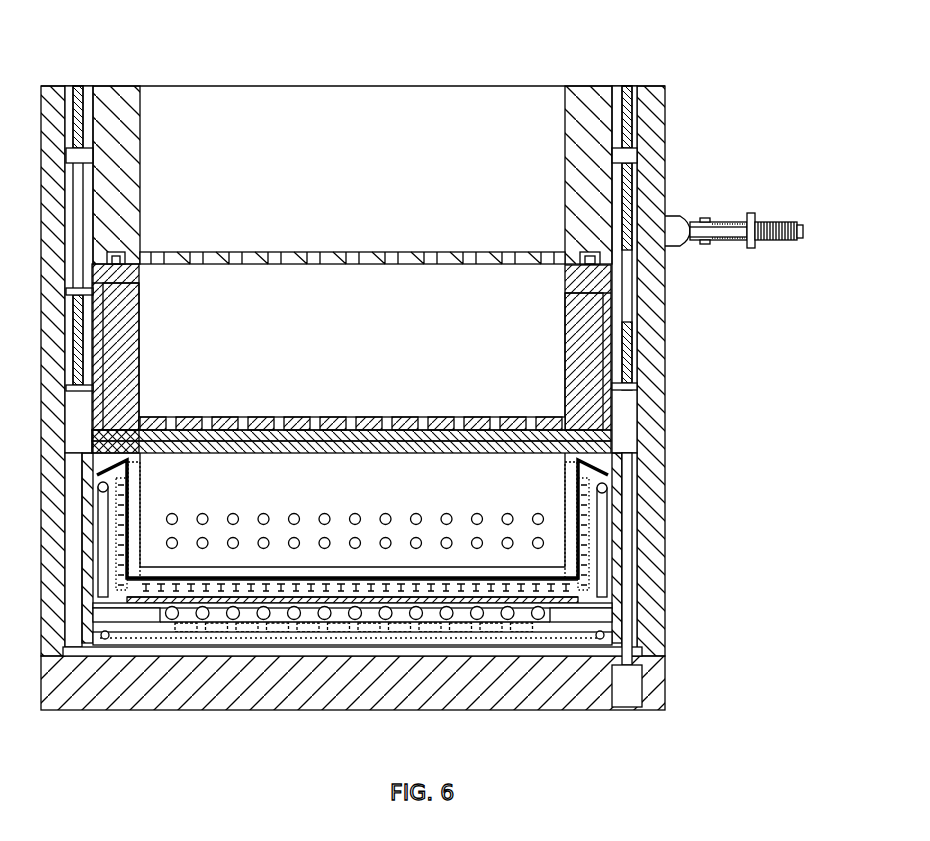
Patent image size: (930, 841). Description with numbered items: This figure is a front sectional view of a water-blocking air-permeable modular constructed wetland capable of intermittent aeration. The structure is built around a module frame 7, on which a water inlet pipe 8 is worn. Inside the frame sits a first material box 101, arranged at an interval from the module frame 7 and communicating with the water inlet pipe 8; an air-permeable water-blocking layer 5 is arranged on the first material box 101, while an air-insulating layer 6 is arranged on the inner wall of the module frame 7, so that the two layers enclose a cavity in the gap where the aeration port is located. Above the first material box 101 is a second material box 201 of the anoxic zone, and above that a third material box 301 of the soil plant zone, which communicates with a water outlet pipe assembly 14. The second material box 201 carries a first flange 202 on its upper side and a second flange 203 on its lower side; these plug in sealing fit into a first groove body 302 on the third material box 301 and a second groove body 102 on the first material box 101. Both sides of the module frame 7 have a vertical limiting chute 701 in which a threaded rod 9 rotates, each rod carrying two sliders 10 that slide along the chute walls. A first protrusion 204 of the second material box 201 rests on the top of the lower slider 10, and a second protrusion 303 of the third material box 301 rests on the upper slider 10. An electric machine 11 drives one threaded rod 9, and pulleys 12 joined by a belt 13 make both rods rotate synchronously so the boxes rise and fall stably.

The air-permeable water-blocking layer 5 is at (133, 493).
The air-insulating layer 6 is at (515, 643).
The module frame 7 is at (657, 158).
The limiting chute 701 is at (640, 90).
The water inlet pipe 8 is at (190, 633).
The threaded rod 9 is at (628, 92).
The slider 10 is at (627, 157).
The electric machine 11 is at (632, 697).
The pulley 12 is at (642, 648).
The belt 13 is at (387, 650).
The water outlet pipe assembly 14 is at (738, 208).
The first material box 101 is at (340, 445).
The second groove body 102 is at (455, 447).
The second material box 201 is at (255, 417).
The first flange 202 is at (115, 278).
The second flange 203 is at (112, 440).
The first protrusion 204 is at (600, 325).
The third material box 301 is at (117, 102).
The first groove body 302 is at (122, 260).
The second protrusion 303 is at (618, 93).